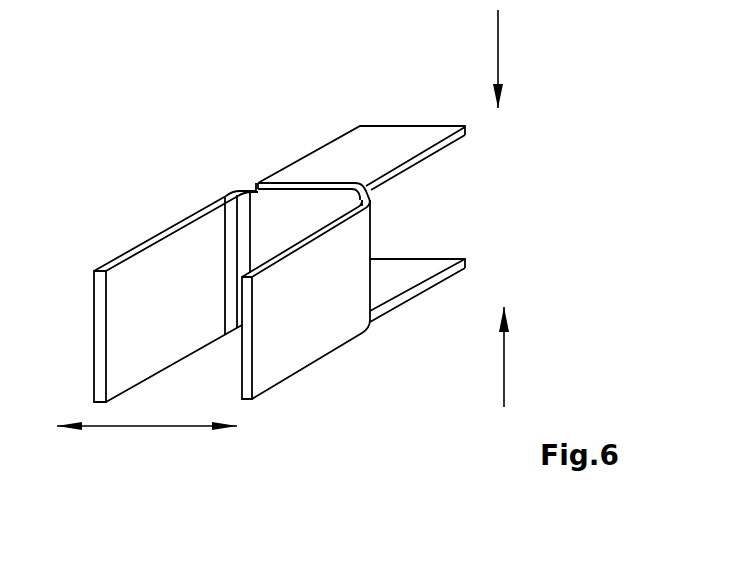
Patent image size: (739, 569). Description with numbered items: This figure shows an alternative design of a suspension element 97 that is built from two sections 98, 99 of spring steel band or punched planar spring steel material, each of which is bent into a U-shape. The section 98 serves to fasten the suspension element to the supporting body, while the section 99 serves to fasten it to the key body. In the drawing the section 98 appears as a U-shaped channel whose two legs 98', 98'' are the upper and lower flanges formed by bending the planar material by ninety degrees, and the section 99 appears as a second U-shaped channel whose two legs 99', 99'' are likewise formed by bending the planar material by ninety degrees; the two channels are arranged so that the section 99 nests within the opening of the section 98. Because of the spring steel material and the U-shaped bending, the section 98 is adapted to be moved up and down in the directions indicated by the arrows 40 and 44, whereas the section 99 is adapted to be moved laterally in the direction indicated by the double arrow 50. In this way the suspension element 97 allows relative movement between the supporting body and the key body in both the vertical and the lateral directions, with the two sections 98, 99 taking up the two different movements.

The arrow 40 is at (498, 45).
The arrow 44 is at (504, 365).
The double arrow 50 is at (118, 427).
The suspension element 97 is at (393, 342).
The section 98 is at (429, 171).
The leg 98' is at (361, 111).
The leg 98'' is at (430, 238).
The section 99 is at (199, 352).
The leg 99' is at (135, 268).
The leg 99'' is at (306, 330).